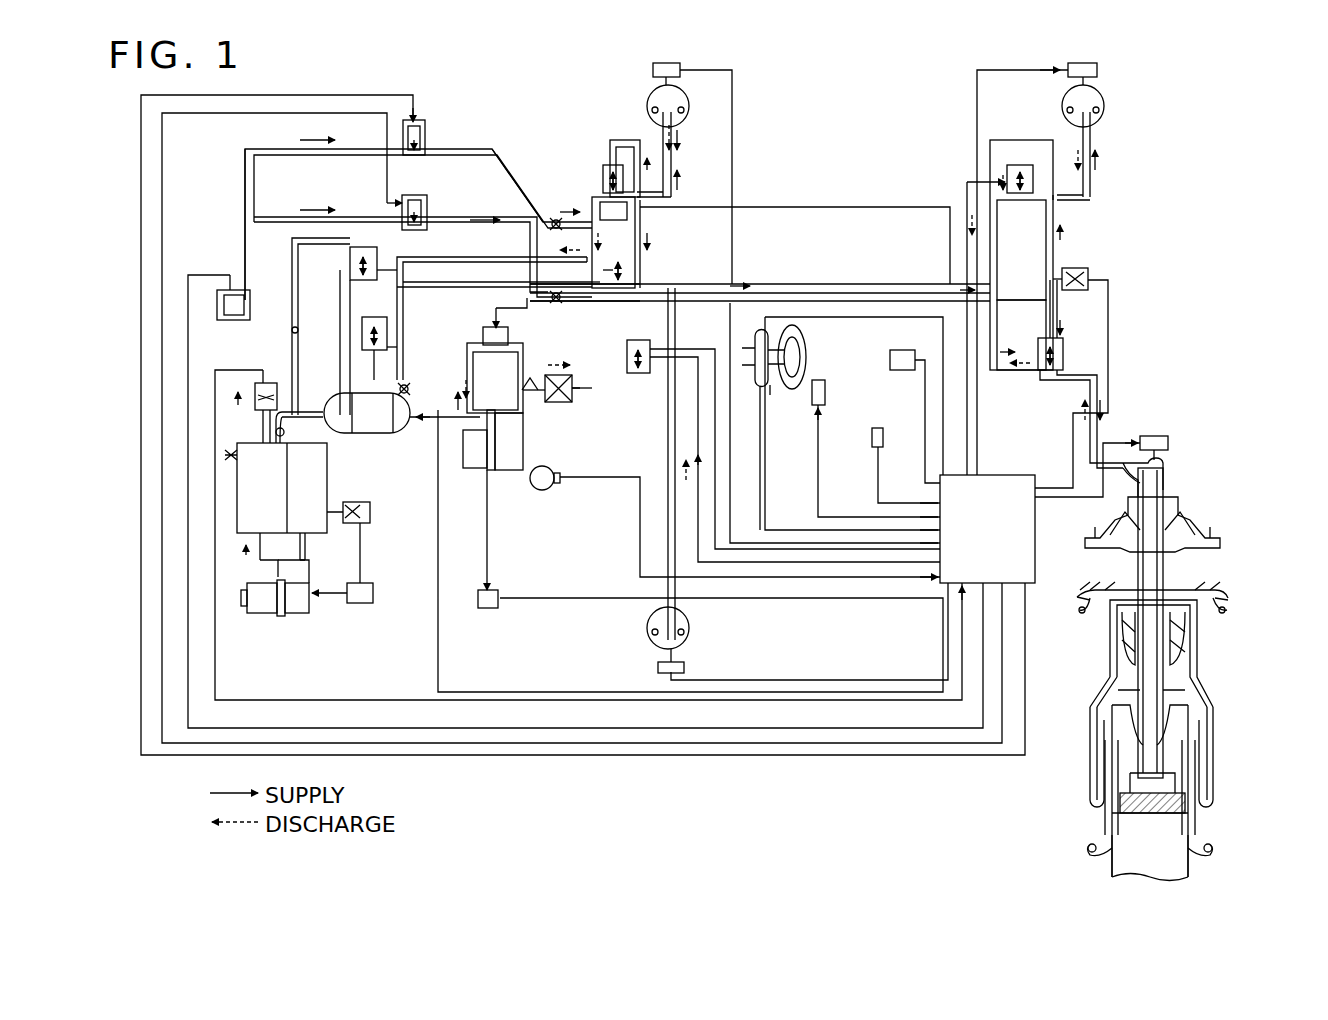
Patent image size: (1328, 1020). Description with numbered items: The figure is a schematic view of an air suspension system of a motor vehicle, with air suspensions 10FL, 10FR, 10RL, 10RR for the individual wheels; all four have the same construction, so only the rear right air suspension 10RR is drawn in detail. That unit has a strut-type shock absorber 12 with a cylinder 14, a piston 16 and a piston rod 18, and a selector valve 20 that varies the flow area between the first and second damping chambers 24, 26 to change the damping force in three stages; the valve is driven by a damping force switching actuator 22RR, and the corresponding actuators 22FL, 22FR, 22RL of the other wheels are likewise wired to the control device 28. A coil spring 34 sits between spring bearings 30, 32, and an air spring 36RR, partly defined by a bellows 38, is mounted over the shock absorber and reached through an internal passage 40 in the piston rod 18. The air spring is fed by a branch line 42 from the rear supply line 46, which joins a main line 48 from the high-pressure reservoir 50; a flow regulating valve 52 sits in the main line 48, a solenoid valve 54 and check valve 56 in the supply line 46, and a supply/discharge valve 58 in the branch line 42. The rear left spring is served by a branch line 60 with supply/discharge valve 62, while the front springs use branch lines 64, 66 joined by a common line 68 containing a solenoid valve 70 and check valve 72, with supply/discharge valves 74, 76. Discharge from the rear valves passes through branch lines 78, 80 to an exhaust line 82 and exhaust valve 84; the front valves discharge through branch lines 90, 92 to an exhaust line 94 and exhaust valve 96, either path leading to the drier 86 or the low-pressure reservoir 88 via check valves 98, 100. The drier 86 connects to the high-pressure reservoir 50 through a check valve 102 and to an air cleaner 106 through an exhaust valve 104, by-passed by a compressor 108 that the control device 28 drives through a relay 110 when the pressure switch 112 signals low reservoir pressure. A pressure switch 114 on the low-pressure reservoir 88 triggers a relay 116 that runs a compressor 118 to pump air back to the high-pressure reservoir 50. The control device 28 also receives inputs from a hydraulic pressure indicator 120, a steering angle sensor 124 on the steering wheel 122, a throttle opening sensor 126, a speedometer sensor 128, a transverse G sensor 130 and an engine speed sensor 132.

The air suspension 10FL is at (647, 105).
The air suspension 10FR is at (690, 630).
The air suspension 10RL is at (1104, 104).
The air suspension 10RR is at (1210, 492).
The strut-type shock absorber 12 is at (1140, 862).
The cylinder 14 is at (1190, 752).
The piston 16 is at (1190, 818).
The piston rod 18 is at (1112, 665).
The selector valve 20 is at (1160, 808).
The damping force switching actuator 22FL is at (653, 70).
The damping force switching actuator 22FR is at (684, 668).
The damping force switching actuator 22RL is at (1097, 70).
The damping force switching actuator 22RR is at (1168, 445).
The first damping chamber 24 is at (1118, 748).
The second damping chamber 26 is at (1105, 830).
The control device 28 is at (1002, 475).
The spring bearing 30 is at (1228, 596).
The spring bearing 32 is at (1210, 860).
The coil spring 34 is at (1225, 615).
The air spring 36RR is at (1185, 672).
The bellows 38 is at (1213, 722).
The internal passage 40 is at (1165, 575).
The branch line 42 is at (1097, 430).
The supply line 46 is at (882, 300).
The main line 48 is at (245, 248).
The high-pressure reservoir 50 is at (233, 540).
The flow regulating valve 52 is at (262, 290).
The solenoid valve 54 is at (427, 208).
The check valve 56 is at (555, 302).
The supply/discharge valve 58 is at (1065, 352).
The branch line 60 is at (1092, 185).
The supply/discharge valve 62 is at (1008, 165).
The branch line 64 is at (650, 265).
The branch line 66 is at (624, 140).
The common line 68 is at (512, 152).
The solenoid valve 70 is at (425, 128).
The check valve 72 is at (556, 218).
The supply/discharge valve 74 is at (638, 375).
The supply/discharge valve 76 is at (604, 170).
The branch line 78 is at (992, 322).
The branch line 80 is at (992, 240).
The exhaust line 82 is at (822, 283).
The exhaust valve 84 is at (387, 335).
The drier 86 is at (380, 435).
The low-pressure reservoir 88 is at (313, 545).
The branch line 90 is at (600, 290).
The branch line 92 is at (587, 250).
The exhaust line 94 is at (505, 240).
The exhaust valve 96 is at (377, 256).
The check valve 98 is at (425, 385).
The check valve 100 is at (318, 320).
The check valve 102 is at (285, 434).
The exhaust valve 104 is at (489, 326).
The air cleaner 106 is at (558, 402).
The compressor 108 is at (510, 470).
The relay 110 is at (498, 596).
The pressure switch 112 is at (262, 382).
The pressure switch 114 is at (370, 512).
The relay 116 is at (360, 603).
The compressor 118 is at (292, 615).
The indicator 120 is at (825, 385).
The steering wheel 122 is at (806, 350).
The steering angle sensor 124 is at (775, 385).
The throttle opening sensor 126 is at (545, 490).
The speedometer sensor 128 is at (775, 392).
The transverse G sensor 130 is at (872, 437).
The engine speed sensor 132 is at (898, 370).